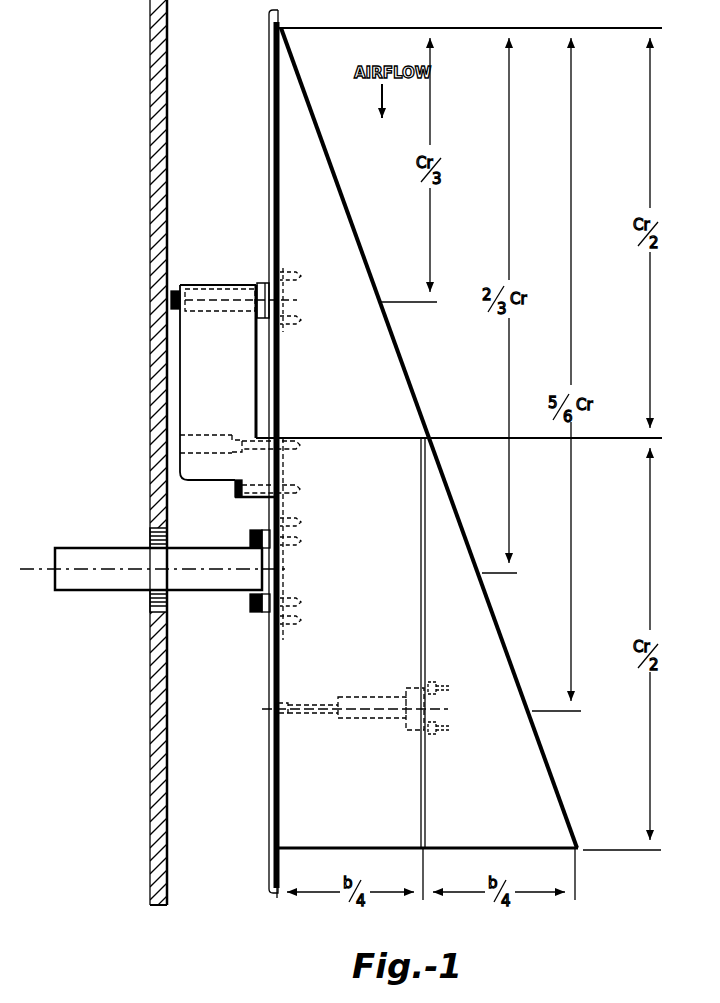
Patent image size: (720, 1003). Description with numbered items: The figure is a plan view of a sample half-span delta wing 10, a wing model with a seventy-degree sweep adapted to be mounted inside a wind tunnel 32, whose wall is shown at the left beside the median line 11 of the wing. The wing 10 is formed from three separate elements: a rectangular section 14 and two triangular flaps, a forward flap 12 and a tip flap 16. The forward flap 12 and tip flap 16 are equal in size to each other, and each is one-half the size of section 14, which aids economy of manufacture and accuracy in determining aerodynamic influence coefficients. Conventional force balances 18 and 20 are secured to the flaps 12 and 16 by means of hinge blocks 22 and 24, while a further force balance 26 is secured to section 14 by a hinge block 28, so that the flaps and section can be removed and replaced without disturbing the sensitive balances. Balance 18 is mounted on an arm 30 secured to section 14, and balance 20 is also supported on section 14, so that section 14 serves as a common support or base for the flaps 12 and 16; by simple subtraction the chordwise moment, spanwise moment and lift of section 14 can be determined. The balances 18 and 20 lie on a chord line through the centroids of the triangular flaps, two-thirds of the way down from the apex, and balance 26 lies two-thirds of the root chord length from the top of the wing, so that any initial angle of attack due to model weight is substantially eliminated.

The half-span delta wing 10 is at (302, 66).
The median line 11 is at (269, 766).
The forward flap 12 is at (339, 311).
The section 14 is at (352, 645).
The tip flap 16 is at (492, 790).
The force balance 18 is at (218, 284).
The force balance 20 is at (368, 686).
The hinge block 22 is at (264, 283).
The hinge block 24 is at (416, 730).
The force balance 26 is at (226, 550).
The hinge block 28 is at (262, 614).
The arm 30 is at (225, 377).
The wind tunnel 32 is at (151, 50).